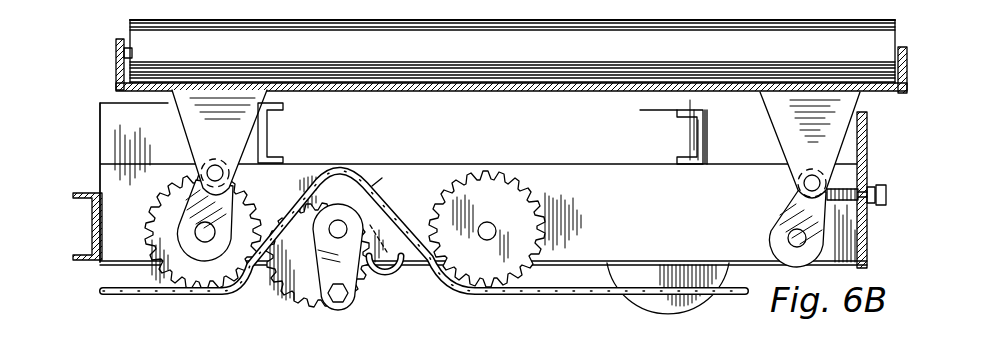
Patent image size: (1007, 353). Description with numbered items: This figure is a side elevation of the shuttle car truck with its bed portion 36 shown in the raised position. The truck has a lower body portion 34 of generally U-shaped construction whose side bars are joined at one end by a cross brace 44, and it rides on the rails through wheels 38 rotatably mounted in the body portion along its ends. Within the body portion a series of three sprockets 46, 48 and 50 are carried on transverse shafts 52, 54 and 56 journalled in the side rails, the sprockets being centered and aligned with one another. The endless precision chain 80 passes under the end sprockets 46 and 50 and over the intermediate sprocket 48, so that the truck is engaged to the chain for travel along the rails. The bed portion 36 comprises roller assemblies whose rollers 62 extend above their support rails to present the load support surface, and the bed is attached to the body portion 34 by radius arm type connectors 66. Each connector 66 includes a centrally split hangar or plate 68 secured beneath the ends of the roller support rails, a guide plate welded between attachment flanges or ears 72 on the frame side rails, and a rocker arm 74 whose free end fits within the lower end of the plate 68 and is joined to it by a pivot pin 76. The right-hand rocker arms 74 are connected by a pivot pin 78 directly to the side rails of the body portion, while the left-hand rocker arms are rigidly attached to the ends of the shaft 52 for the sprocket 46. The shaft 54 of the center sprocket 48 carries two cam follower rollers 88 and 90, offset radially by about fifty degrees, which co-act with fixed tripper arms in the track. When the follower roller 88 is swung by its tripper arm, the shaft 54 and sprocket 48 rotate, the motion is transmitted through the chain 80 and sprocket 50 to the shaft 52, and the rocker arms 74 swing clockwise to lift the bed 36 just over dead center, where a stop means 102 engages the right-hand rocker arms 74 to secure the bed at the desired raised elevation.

The body portion 34 is at (72, 200).
The bed portion 36 is at (114, 48).
The wheels 38 is at (282, 292).
The cross brace 44 is at (75, 182).
The sprocket 46 is at (162, 238).
The sprocket 48 is at (346, 186).
The sprocket 50 is at (516, 229).
The transverse shaft 52 is at (213, 228).
The transverse shaft 54 is at (382, 178).
The transverse shaft 56 is at (486, 240).
The roller 62 is at (114, 68).
The radius arm type connector 66 is at (157, 116).
The split hangar or plate 68 is at (245, 100).
The attachment flanges or ears 72 is at (268, 142).
The rocker arm 74 is at (197, 185).
The pivot pin 76 is at (218, 165).
The pivot pin 78 is at (806, 240).
The endless precision chain 80 is at (104, 290).
The cam follower roller 88 is at (342, 228).
The cam follower roller 90 is at (396, 282).
The stop means 102 is at (900, 177).